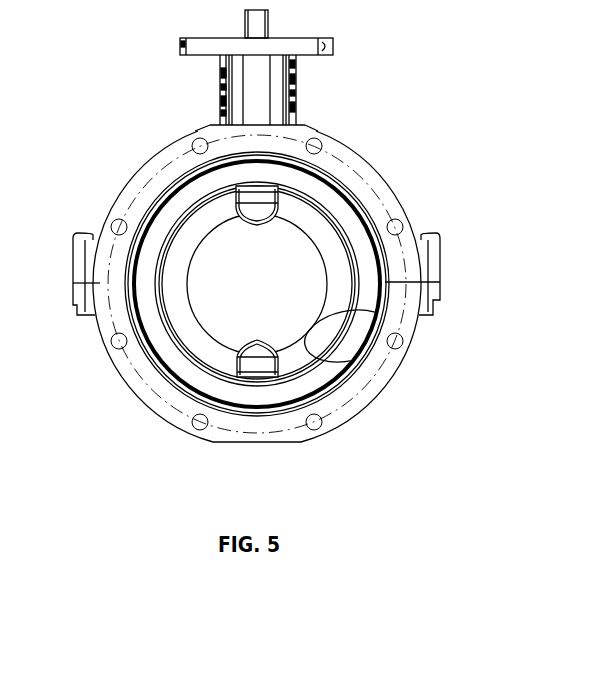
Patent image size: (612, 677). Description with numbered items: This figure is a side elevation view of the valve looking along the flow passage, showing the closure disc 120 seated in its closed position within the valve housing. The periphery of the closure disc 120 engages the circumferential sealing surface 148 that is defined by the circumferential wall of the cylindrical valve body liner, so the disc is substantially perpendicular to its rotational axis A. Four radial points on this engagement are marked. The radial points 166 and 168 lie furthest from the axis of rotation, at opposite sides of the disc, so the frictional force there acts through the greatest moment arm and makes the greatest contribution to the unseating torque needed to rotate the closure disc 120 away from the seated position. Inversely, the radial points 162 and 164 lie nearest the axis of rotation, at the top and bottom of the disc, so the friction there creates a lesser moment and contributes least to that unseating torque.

The closure disc 120 is at (220, 312).
The circumferential sealing surface 148 is at (373, 311).
The radial point 162 is at (283, 375).
The radial point 164 is at (236, 187).
The radial point 166 is at (157, 285).
The radial point 168 is at (357, 279).